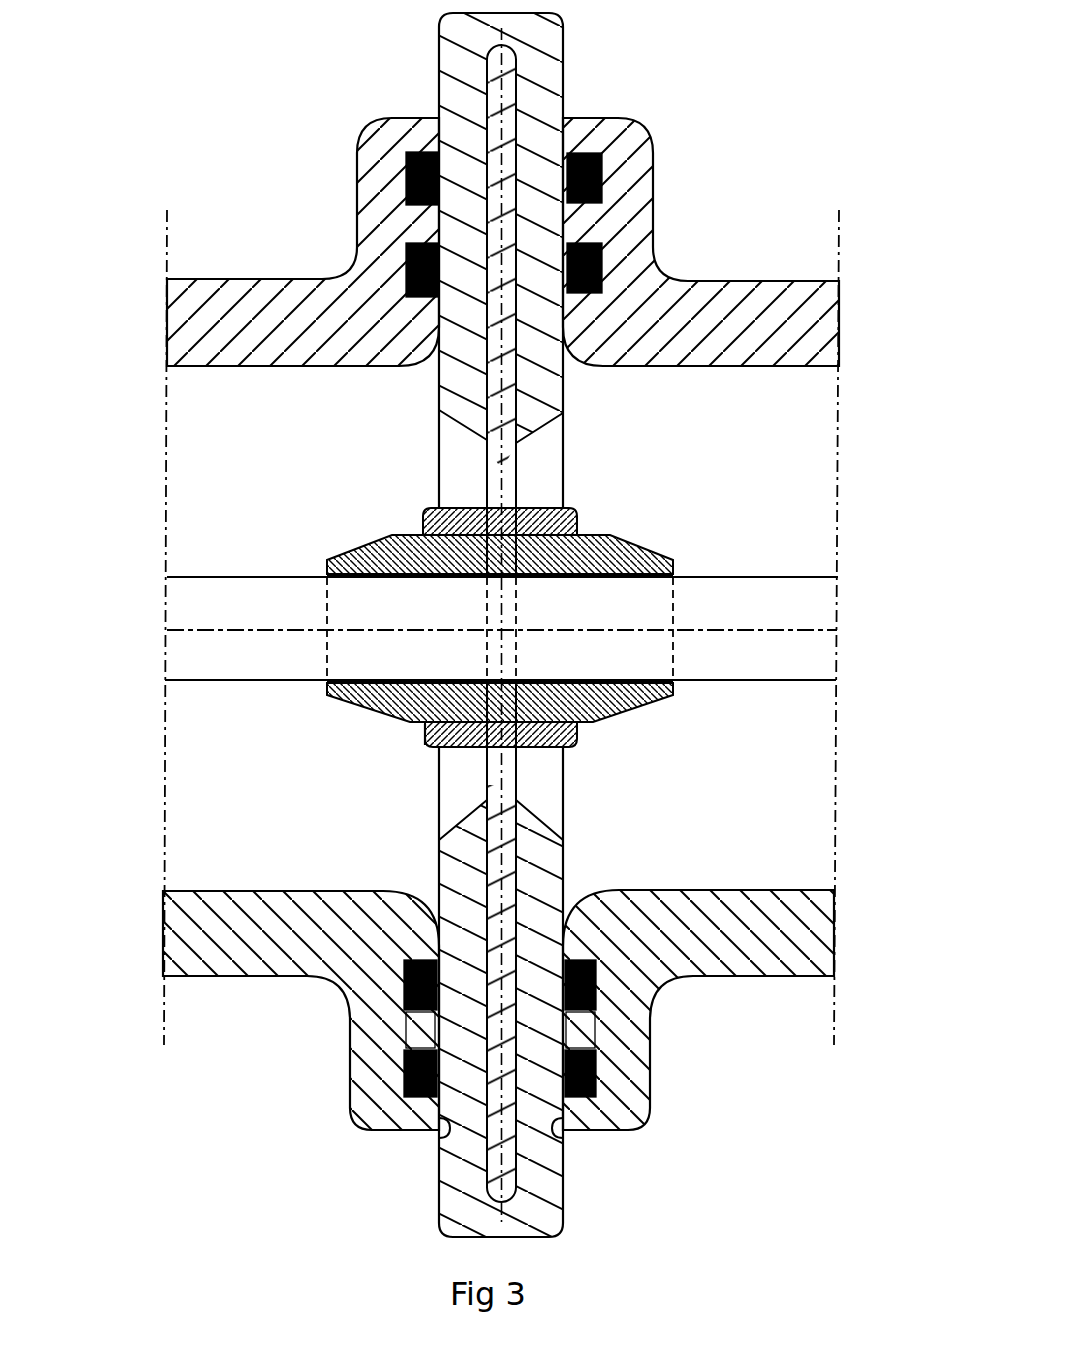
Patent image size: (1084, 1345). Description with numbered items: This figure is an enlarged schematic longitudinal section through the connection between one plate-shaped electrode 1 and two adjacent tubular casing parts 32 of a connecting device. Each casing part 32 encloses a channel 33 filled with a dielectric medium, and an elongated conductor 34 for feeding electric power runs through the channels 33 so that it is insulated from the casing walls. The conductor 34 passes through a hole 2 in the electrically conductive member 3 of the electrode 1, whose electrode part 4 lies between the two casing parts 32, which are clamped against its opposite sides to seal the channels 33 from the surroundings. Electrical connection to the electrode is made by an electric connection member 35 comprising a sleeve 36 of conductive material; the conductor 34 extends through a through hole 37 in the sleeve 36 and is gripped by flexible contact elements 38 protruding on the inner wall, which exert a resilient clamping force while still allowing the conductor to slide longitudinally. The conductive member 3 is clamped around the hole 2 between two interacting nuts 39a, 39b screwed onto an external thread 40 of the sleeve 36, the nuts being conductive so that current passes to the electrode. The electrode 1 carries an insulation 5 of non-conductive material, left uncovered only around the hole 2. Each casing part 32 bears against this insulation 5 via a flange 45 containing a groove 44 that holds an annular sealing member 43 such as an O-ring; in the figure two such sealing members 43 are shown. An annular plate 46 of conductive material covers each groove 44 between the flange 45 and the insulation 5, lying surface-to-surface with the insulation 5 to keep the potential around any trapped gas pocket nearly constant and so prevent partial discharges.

The electrode 1 is at (585, 60).
The hole 2 is at (490, 530).
The electrically conductive member 3 is at (500, 108).
The electrode part 4 is at (432, 357).
The insulation 5 is at (455, 45).
The casing part 32 is at (250, 292).
The channel 33 is at (180, 532).
The conductor 34 is at (798, 576).
The electric connection member 35 is at (641, 524).
The sleeve 36 is at (645, 702).
The through hole 37 is at (647, 577).
The contact elements 38 is at (535, 580).
The nut 39a is at (440, 748).
The nut 39b is at (580, 742).
The external thread 40 is at (420, 740).
The sealing member 43 is at (405, 968).
The groove 44 is at (405, 1047).
The flange 45 is at (376, 186).
The annular plate 46 is at (440, 1140).